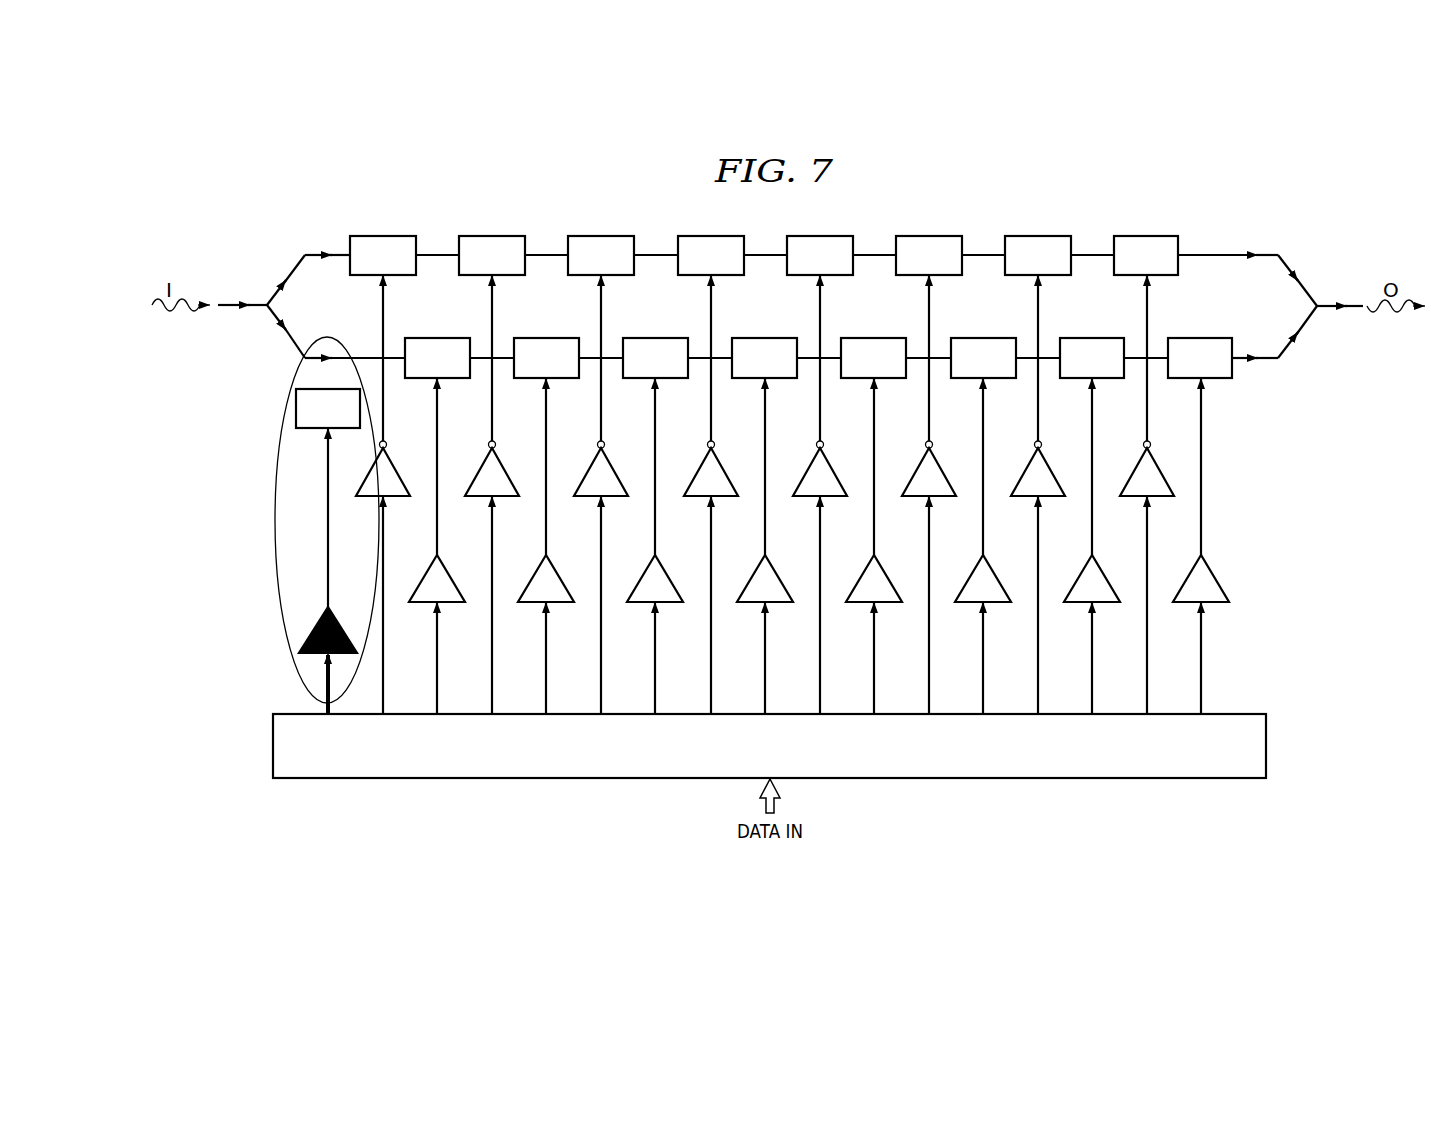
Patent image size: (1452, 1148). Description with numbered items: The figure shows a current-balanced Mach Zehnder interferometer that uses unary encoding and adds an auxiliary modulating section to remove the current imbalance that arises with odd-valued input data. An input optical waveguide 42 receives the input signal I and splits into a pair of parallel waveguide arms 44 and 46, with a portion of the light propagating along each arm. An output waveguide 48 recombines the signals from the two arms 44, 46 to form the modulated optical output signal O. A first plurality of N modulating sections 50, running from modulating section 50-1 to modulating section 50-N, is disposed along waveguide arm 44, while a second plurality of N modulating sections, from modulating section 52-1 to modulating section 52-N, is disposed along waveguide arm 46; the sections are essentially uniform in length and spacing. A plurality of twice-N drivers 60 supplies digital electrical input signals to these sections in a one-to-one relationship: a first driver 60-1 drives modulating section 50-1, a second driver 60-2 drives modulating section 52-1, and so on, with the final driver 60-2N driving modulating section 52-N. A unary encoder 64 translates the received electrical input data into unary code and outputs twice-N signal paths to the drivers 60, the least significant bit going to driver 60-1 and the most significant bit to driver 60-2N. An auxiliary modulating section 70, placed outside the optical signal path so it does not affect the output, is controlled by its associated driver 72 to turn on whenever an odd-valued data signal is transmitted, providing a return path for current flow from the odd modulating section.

The input optical waveguide 42 is at (227, 302).
The waveguide arm 44 is at (315, 252).
The waveguide arm 46 is at (358, 355).
The output waveguide 48 is at (1326, 303).
The first plurality of N modulating sections 50 is at (814, 224).
The modulating section 50-1 is at (405, 266).
The modulating section 50-N is at (1168, 266).
The modulating section 52-1 is at (460, 368).
The modulating section 52-N is at (1222, 368).
The plurality of 2N drivers 60 is at (831, 494).
The first driver 60-1 is at (383, 473).
The second driver 60-2 is at (437, 580).
The driver 60-2N is at (1235, 448).
The unary encoder 64 is at (1266, 749).
The auxiliary modulating section 70 is at (338, 419).
The driver 72 is at (310, 636).